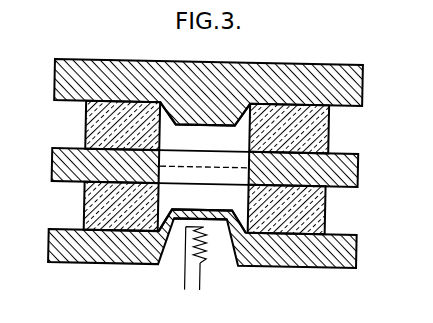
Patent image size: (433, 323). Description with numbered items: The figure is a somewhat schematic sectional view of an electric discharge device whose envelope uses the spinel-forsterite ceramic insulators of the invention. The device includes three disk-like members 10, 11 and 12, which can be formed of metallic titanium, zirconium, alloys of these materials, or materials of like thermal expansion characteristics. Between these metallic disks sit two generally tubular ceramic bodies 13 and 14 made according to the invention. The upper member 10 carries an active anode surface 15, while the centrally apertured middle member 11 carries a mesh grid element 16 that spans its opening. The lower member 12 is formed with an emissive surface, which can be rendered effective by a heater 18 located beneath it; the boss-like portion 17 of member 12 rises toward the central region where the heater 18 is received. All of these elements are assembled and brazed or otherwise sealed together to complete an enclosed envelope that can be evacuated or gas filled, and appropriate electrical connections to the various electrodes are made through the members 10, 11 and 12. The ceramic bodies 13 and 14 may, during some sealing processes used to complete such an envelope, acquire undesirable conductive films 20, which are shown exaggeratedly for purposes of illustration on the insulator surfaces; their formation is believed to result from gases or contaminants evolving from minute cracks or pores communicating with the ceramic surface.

The member 10 is at (323, 76).
The member 11 is at (358, 167).
The member 12 is at (295, 266).
The ceramic body 13 is at (86, 126).
The ceramic body 14 is at (86, 206).
The active anode surface 15 is at (190, 127).
The mesh grid element 16 is at (220, 168).
The projection of lower platen 17 is at (215, 210).
The heater 18 is at (206, 247).
The conductive films 20 is at (248, 138).